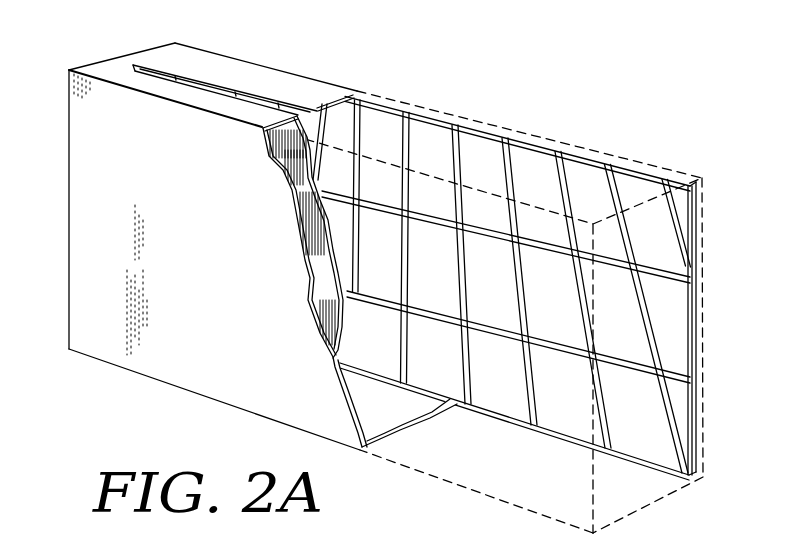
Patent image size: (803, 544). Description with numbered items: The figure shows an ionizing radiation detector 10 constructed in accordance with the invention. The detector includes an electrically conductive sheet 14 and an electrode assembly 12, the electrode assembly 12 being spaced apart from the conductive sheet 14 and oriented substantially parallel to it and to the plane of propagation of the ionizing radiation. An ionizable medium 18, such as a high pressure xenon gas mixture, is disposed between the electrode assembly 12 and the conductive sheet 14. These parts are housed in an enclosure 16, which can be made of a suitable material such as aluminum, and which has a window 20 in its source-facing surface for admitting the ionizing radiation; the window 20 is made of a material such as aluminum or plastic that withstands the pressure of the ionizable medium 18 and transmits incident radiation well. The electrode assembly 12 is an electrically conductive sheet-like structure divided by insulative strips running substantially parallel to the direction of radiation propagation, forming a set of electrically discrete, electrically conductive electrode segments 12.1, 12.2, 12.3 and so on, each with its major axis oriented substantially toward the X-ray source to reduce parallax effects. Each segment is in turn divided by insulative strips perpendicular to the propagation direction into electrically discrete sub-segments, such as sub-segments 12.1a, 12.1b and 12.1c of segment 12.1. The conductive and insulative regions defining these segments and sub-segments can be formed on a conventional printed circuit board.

The ionizing radiation detector 10 is at (628, 103).
The electrode assembly 12 is at (479, 252).
The electrode segment 12.1 is at (633, 190).
The electrode segment 12.2 is at (572, 173).
The electrode segment 12.3 is at (520, 160).
The electrode sub-segment 12.1a is at (672, 263).
The electrode sub-segment 12.1b is at (675, 343).
The electrode sub-segment 12.1c is at (682, 414).
The electrically conductive sheet 14 is at (315, 238).
The enclosure 16 is at (95, 107).
The ionizable medium 18 is at (650, 487).
The window 20 is at (150, 67).